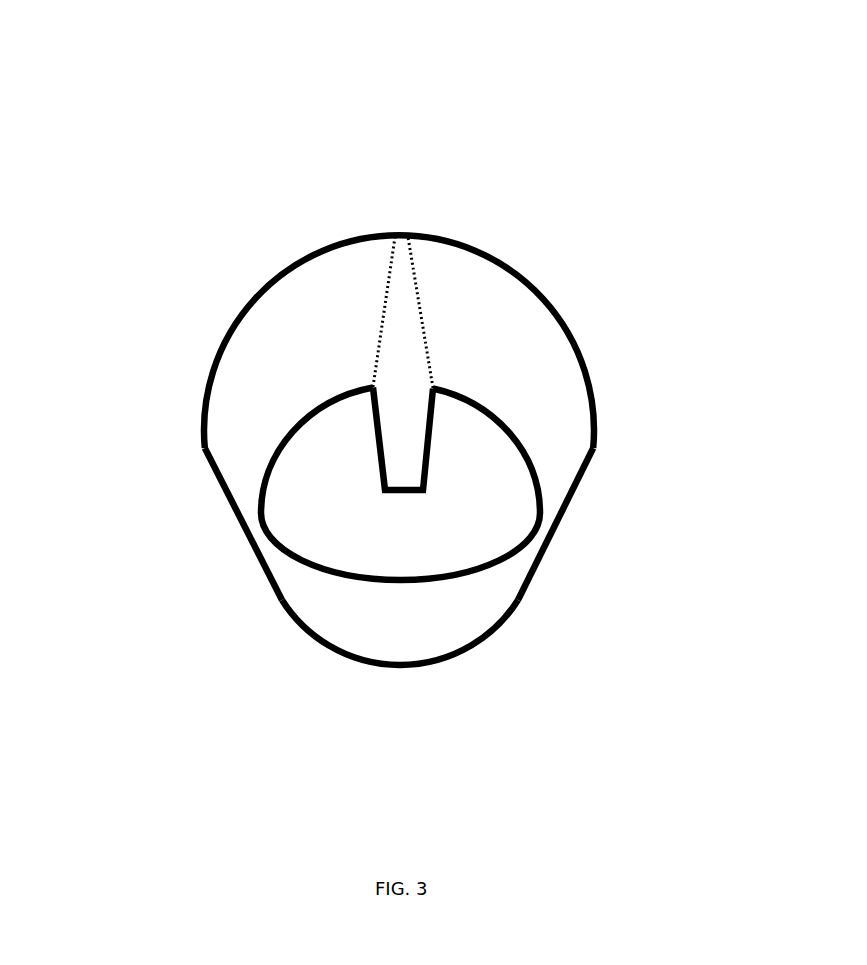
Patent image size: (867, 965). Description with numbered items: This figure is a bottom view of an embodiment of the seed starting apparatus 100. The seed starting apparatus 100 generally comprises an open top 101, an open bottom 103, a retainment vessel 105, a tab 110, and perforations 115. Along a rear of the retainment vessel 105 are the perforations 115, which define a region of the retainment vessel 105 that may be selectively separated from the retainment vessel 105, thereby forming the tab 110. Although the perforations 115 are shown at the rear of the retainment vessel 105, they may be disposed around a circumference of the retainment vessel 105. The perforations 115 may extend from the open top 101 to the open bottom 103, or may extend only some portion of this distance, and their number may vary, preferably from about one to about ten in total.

The seed starting apparatus 100 is at (670, 42).
The open top 101 is at (347, 657).
The open bottom 103 is at (204, 392).
The retainment vessel 105 is at (500, 593).
The tab 110 is at (407, 357).
The perforations 115 is at (380, 345).